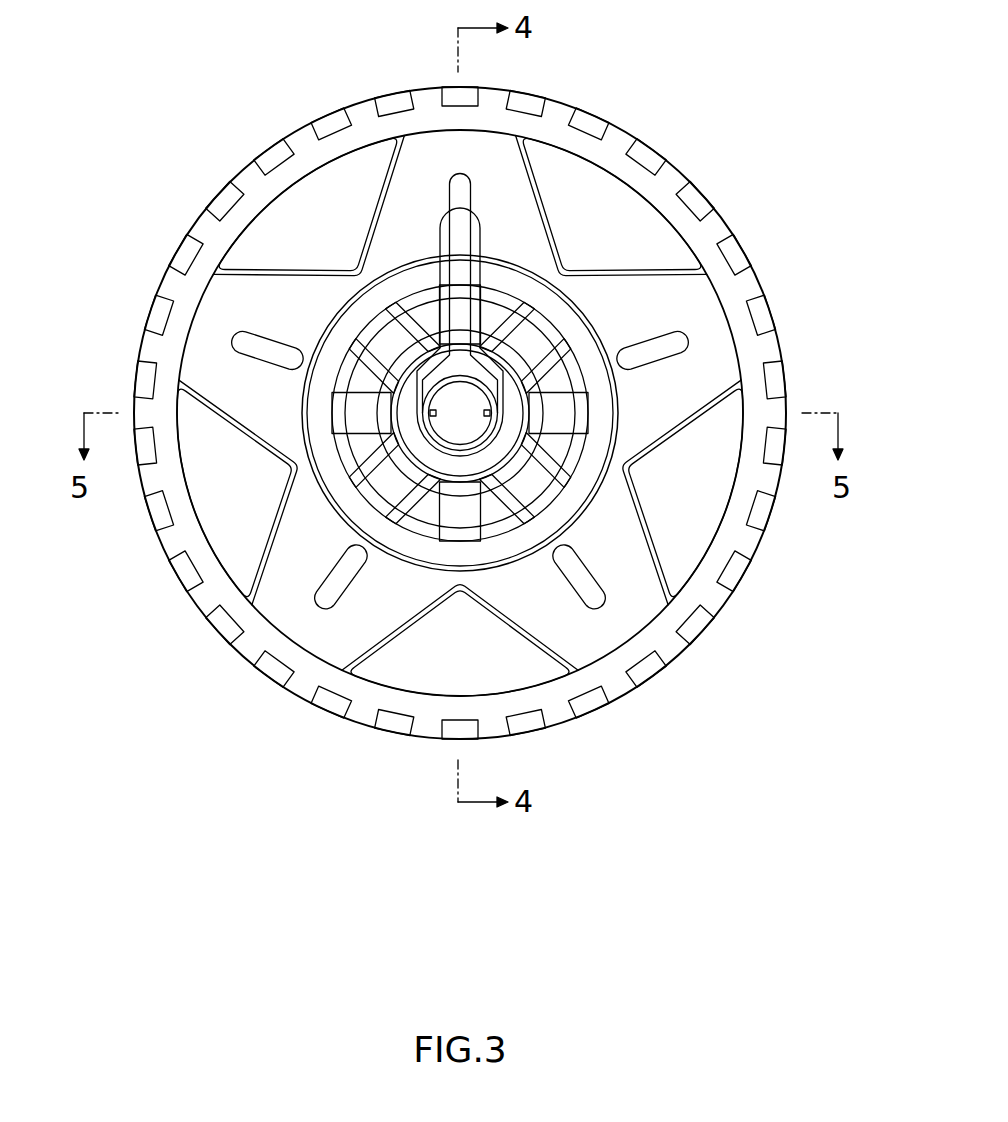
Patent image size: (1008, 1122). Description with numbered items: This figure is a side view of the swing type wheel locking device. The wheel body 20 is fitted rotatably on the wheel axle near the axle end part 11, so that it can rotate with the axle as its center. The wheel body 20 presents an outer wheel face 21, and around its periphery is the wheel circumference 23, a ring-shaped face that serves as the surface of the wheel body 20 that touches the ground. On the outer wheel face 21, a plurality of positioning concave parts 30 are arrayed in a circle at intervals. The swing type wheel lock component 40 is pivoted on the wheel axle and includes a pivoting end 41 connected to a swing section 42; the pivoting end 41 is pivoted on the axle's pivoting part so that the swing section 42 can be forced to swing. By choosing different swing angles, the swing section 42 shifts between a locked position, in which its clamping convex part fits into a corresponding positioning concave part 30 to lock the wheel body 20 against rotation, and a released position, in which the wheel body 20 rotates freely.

The wheel body 20 is at (777, 158).
The wheel circumference 23 is at (352, 100).
The outer wheel face 21 is at (348, 497).
The swing section 42 is at (412, 276).
The positioning concave parts 30 is at (463, 300).
The swing type wheel lock component 40 is at (490, 273).
The pivoting end 41 is at (486, 418).
The axle end part 11 is at (487, 435).